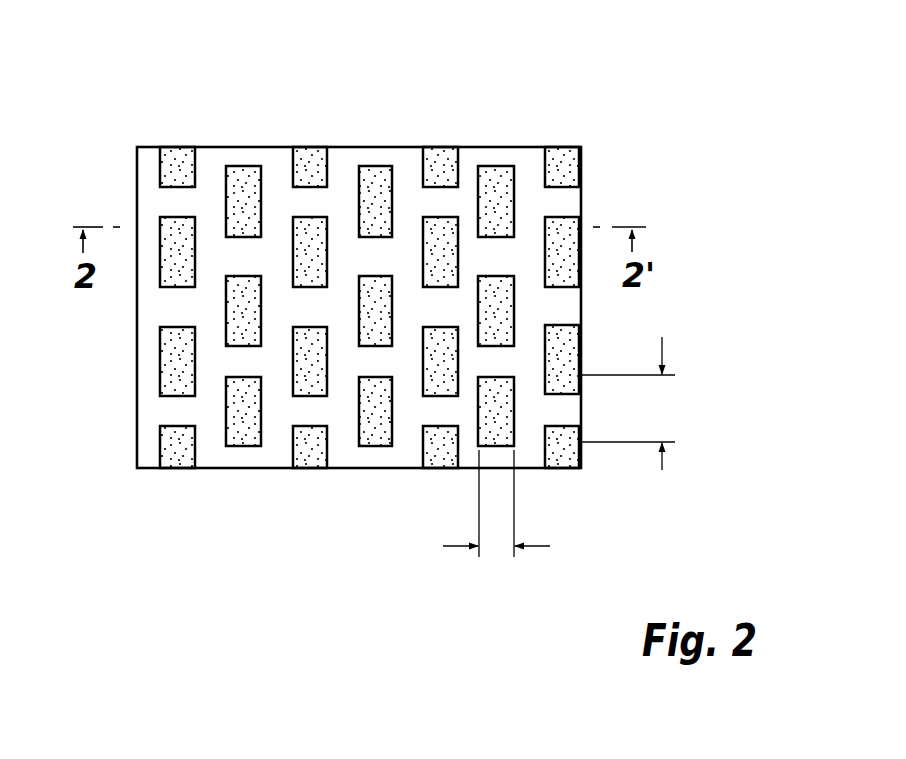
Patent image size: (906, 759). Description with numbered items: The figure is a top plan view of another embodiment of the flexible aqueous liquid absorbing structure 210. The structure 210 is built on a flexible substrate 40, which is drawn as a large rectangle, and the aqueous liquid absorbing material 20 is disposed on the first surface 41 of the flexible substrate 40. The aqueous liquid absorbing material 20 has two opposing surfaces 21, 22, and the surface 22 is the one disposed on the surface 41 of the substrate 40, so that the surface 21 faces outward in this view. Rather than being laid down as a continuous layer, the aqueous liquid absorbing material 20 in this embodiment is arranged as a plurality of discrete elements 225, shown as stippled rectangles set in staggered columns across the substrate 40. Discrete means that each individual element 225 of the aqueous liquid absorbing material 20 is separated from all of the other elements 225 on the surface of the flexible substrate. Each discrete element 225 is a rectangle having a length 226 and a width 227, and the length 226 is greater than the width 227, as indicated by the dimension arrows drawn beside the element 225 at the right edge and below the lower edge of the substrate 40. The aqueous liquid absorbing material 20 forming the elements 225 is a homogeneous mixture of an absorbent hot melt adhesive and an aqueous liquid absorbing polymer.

The flexible aqueous liquid absorbing structure 210 is at (149, 101).
The flexible substrate 40 is at (137, 465).
The first surface 41 is at (155, 307).
The opposing surface 21 is at (167, 352).
The opposing surface 22 is at (162, 383).
The aqueous liquid absorbing material 20 is at (235, 447).
The discrete element 225 is at (514, 312).
The length 226 is at (665, 409).
The width 227 is at (495, 553).